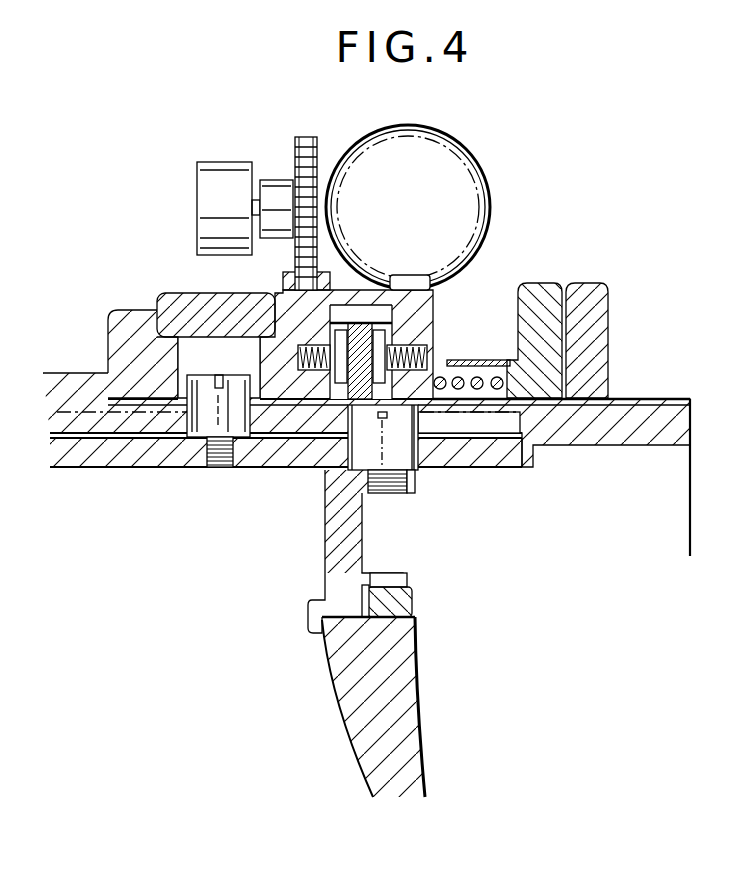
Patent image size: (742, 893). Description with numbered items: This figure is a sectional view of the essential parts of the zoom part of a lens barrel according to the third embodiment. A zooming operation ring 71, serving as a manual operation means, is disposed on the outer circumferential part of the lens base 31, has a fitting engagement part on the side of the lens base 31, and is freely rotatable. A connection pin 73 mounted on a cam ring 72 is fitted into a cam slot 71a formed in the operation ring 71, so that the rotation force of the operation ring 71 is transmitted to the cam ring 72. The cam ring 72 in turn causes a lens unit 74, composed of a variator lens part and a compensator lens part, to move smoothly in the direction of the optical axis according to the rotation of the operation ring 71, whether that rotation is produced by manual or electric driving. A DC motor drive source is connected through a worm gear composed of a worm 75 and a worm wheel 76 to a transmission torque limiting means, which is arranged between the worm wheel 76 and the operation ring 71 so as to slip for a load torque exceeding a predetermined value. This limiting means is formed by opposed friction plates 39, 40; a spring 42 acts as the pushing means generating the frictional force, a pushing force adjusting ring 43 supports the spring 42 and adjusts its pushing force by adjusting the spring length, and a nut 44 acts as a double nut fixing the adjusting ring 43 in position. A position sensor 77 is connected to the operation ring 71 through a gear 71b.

The lens base 31 is at (70, 393).
The friction plate 39 is at (380, 388).
The friction plate 40 is at (404, 478).
The spring 42 is at (487, 390).
The pushing force adjusting ring 43 is at (545, 290).
The nut 44 is at (593, 290).
The zooming operation ring 71 is at (122, 308).
The cam slot 71a is at (192, 348).
The gear 71b is at (283, 273).
The cam ring 72 is at (82, 455).
The connection pin 73 is at (202, 427).
The lens unit 74 is at (403, 765).
The worm 75 is at (456, 192).
The worm wheel 76 is at (433, 316).
The position sensor 77 is at (218, 182).